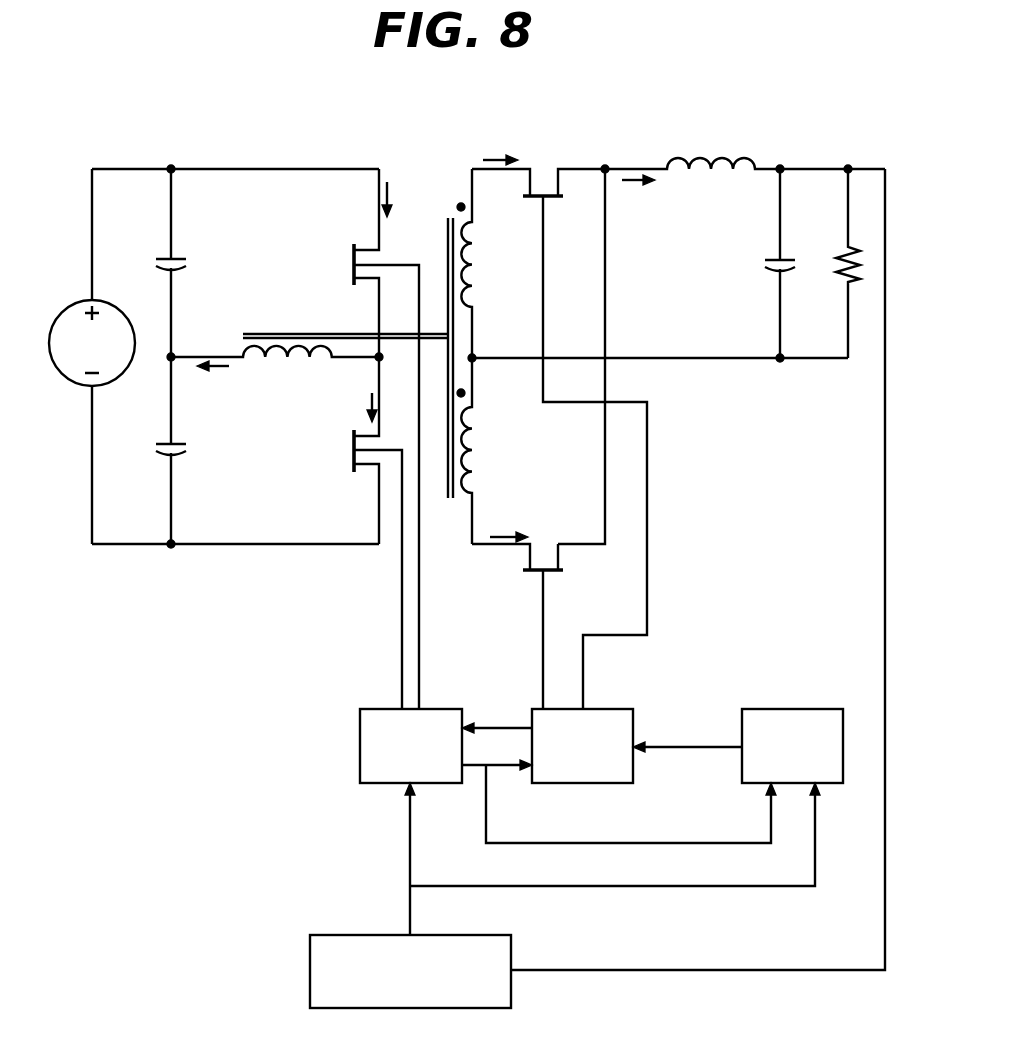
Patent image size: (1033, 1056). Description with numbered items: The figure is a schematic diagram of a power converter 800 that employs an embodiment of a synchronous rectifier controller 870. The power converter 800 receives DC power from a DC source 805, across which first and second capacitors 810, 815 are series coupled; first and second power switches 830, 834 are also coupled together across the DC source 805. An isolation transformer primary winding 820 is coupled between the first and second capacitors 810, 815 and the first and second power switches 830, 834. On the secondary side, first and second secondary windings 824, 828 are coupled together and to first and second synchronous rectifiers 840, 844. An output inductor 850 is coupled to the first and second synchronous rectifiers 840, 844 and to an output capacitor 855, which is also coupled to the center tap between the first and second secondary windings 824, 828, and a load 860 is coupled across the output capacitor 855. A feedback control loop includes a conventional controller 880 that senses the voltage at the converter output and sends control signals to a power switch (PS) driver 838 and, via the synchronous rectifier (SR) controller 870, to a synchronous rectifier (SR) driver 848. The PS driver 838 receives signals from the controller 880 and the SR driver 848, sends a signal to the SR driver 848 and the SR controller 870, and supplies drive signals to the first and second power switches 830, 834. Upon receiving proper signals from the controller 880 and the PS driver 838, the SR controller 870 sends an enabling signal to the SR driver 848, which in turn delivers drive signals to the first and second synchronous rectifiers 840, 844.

The power converter 800 is at (152, 98).
The DC source 805 is at (50, 327).
The first capacitor 810 is at (157, 265).
The second capacitor 815 is at (157, 450).
The isolation transformer primary winding 820 is at (243, 351).
The first secondary winding 824 is at (503, 305).
The second secondary winding 828 is at (466, 497).
The first power switch 830 is at (353, 252).
The second power switch 834 is at (352, 462).
The power switch (PS) driver 838 is at (360, 755).
The first synchronous rectifier 840 is at (549, 198).
The second synchronous rectifier 844 is at (533, 574).
The synchronous rectifier (SR) driver 848 is at (633, 709).
The output inductor 850 is at (745, 160).
The output capacitor 855 is at (765, 264).
The load 860 is at (840, 272).
The synchronous rectifier (SR) controller 870 is at (782, 709).
The controller 880 is at (511, 997).